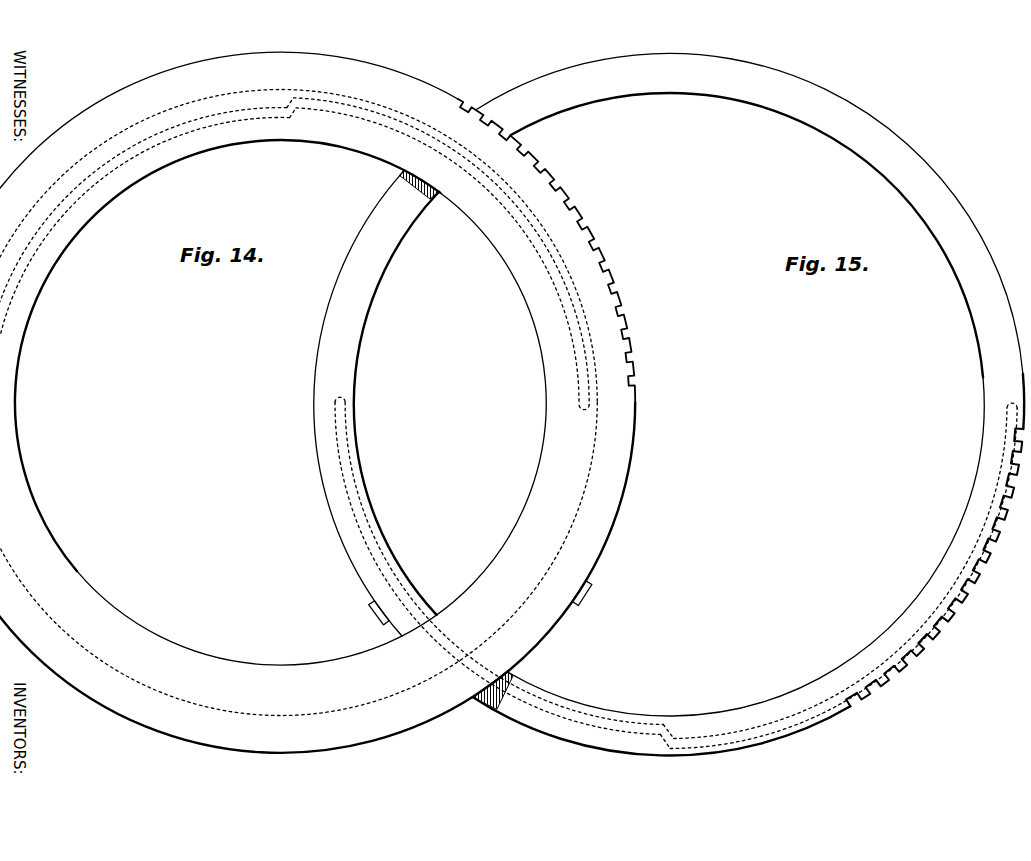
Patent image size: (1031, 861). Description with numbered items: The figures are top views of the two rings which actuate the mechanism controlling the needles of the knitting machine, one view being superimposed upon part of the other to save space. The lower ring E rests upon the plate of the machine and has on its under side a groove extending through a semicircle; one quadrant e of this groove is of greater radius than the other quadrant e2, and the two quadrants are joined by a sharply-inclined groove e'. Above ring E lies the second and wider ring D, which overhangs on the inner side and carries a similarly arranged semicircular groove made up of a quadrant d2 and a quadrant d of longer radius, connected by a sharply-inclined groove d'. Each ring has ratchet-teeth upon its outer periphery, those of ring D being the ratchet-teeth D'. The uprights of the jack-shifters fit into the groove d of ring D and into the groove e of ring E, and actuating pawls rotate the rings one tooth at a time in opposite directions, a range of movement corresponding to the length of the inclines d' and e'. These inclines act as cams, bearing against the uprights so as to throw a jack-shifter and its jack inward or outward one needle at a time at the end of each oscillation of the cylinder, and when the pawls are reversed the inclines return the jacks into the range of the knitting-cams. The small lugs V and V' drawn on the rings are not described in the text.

In FIG. 14, the ring D is at (317, 402).
In FIG. 14, the ratchet-teeth D' is at (546, 251).
In FIG. 14, the quadrant of groove d is at (441, 254).
In FIG. 14, the sharply-inclined groove d' is at (299, 118).
In FIG. 14, the quadrant of groove d2 is at (145, 221).
In FIG. 14, the lug on ring D V' is at (599, 596).
In FIG. 15, the ring E is at (669, 404).
In FIG. 15, the quadrant of groove e is at (843, 575).
In FIG. 15, the sharply-inclined groove e' is at (681, 718).
In FIG. 15, the quadrant of groove e2 is at (499, 565).
In FIG. 15, the lug on ring E V is at (367, 618).